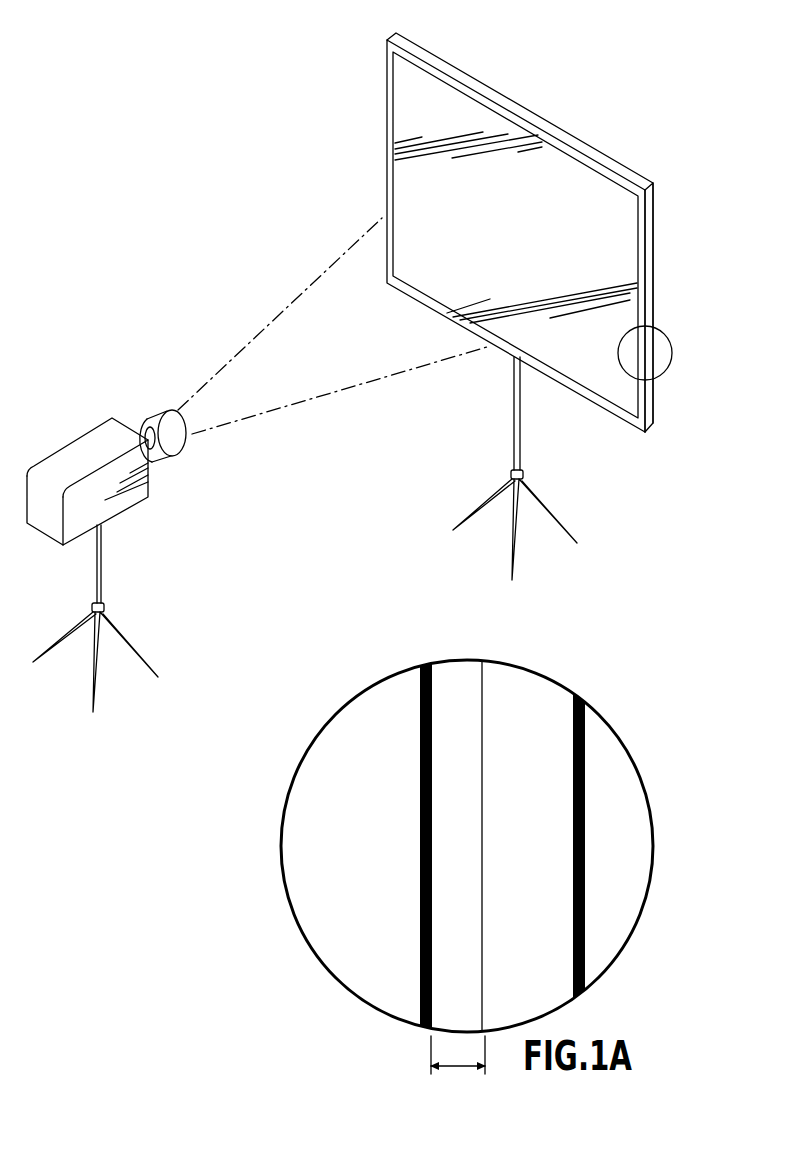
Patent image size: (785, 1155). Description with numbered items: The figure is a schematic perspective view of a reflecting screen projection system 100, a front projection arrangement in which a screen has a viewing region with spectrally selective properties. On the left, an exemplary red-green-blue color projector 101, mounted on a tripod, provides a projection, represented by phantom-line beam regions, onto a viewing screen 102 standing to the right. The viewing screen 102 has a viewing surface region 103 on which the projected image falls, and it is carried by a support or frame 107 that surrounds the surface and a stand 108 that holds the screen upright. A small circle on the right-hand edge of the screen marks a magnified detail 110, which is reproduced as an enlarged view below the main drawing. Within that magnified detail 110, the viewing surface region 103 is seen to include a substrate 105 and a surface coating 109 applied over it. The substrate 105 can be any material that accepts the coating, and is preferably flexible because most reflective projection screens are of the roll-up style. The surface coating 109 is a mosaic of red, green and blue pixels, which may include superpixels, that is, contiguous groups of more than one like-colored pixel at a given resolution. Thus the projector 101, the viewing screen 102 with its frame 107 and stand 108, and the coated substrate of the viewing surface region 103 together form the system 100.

In FIG. 1, the reflecting screen projection system 100 is at (165, 88).
In FIG. 1, the projector 101 is at (74, 428).
In FIG. 1, the viewing screen 102 is at (556, 112).
In FIG. 1, the viewing surface region 103 is at (532, 243).
In FIG. 1A, the substrate 105 is at (456, 1069).
In FIG. 1, the frame 107 is at (655, 210).
In FIG. 1A, the frame 107 is at (532, 688).
In FIG. 1, the stand 108 is at (531, 443).
In FIG. 1A, the surface coating 109 is at (418, 735).
In FIG. 1, the magnified detail 110 is at (673, 378).
In FIG. 1A, the magnified detail 110 is at (320, 698).